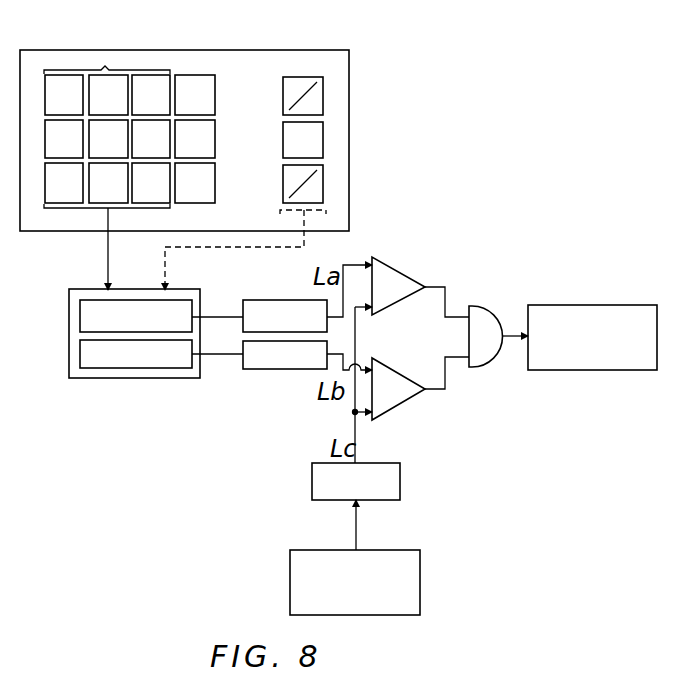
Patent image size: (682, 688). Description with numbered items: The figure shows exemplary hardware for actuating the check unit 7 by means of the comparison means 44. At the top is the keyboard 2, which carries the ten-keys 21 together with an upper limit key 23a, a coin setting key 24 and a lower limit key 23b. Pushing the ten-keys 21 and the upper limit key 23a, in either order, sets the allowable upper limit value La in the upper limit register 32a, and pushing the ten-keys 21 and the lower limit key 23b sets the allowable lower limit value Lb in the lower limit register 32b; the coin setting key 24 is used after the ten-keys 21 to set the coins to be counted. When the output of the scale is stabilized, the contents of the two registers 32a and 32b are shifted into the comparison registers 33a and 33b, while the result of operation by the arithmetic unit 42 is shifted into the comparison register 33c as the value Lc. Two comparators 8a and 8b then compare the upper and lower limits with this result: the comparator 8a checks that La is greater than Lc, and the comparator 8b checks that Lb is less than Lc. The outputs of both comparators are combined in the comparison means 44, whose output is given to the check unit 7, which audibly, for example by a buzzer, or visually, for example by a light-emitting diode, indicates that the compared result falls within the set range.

The keyboard 2 is at (338, 58).
The ten-keys 21 is at (105, 70).
The upper limit key 23a is at (323, 95).
The coin setting key 24 is at (323, 140).
The lower limit key 23b is at (323, 183).
The upper limit register 32a is at (136, 316).
The lower limit register 32b is at (136, 354).
The comparison register 33a is at (285, 316).
The comparison register 33b is at (285, 355).
The comparison register 33c is at (356, 481).
The comparator 8a is at (395, 262).
The comparator 8b is at (395, 408).
The comparison means 44 is at (462, 232).
The check unit 7 is at (605, 308).
The arithmetic unit 42 is at (420, 580).